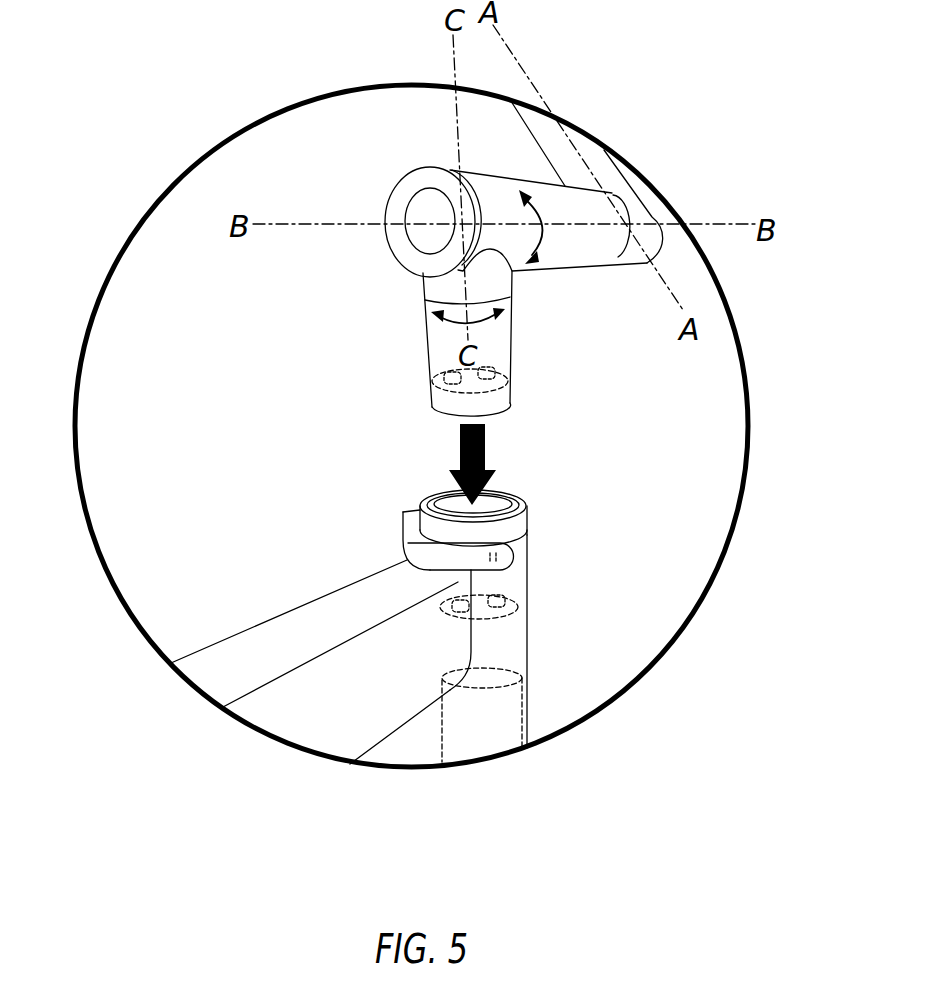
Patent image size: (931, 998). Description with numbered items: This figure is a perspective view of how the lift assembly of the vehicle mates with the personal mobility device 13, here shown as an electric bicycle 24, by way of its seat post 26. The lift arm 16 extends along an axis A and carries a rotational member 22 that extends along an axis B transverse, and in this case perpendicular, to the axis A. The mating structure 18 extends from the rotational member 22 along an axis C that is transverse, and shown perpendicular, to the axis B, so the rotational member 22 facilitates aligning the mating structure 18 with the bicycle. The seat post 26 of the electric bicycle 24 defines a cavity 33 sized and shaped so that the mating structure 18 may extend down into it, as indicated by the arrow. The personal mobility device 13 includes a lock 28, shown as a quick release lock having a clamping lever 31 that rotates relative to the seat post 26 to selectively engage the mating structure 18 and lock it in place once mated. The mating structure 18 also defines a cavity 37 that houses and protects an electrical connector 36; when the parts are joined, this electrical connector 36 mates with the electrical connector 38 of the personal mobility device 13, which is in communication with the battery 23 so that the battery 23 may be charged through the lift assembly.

The personal mobility device 13 is at (314, 647).
The electric bicycle 24 is at (293, 628).
The lift arm 16 is at (538, 125).
The mating structure 18 is at (438, 352).
The rotational member 22 is at (408, 182).
The battery 23 is at (525, 706).
The seat post 26 is at (525, 547).
The lock 28 is at (380, 553).
The clamping lever 31 is at (403, 540).
The cavity 33 is at (503, 485).
The electrical connector 36 is at (508, 372).
The cavity 37 is at (437, 408).
The electrical connector 38 is at (505, 595).